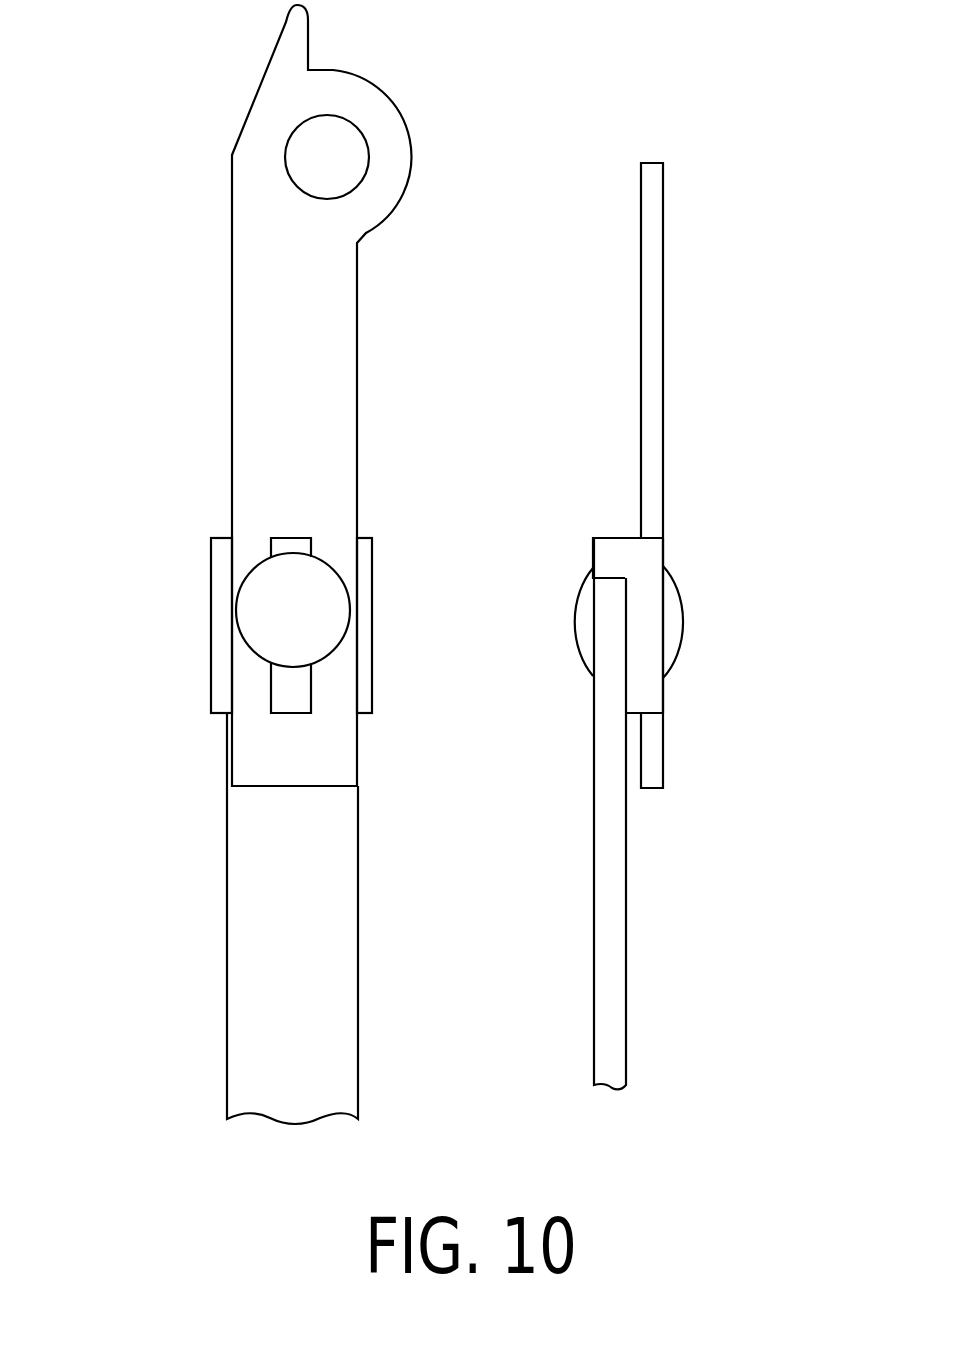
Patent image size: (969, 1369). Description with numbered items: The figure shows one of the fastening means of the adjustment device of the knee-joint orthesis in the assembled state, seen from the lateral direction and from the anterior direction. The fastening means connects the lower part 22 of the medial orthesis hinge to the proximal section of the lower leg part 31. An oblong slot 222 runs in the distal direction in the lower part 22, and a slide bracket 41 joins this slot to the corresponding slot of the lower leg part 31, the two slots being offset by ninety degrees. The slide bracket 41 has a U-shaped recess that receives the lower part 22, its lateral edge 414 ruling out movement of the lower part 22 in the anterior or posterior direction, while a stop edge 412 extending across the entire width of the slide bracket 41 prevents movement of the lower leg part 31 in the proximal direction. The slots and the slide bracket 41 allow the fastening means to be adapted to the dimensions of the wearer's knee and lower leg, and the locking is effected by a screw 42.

The lower part 22 is at (292, 300).
The lower leg part 31 is at (252, 905).
The slide bracket 41 is at (222, 677).
The screw 42 is at (278, 588).
The oblong slot 222 is at (293, 697).
The stop edge 412 is at (608, 560).
The lateral edge 414 is at (648, 607).